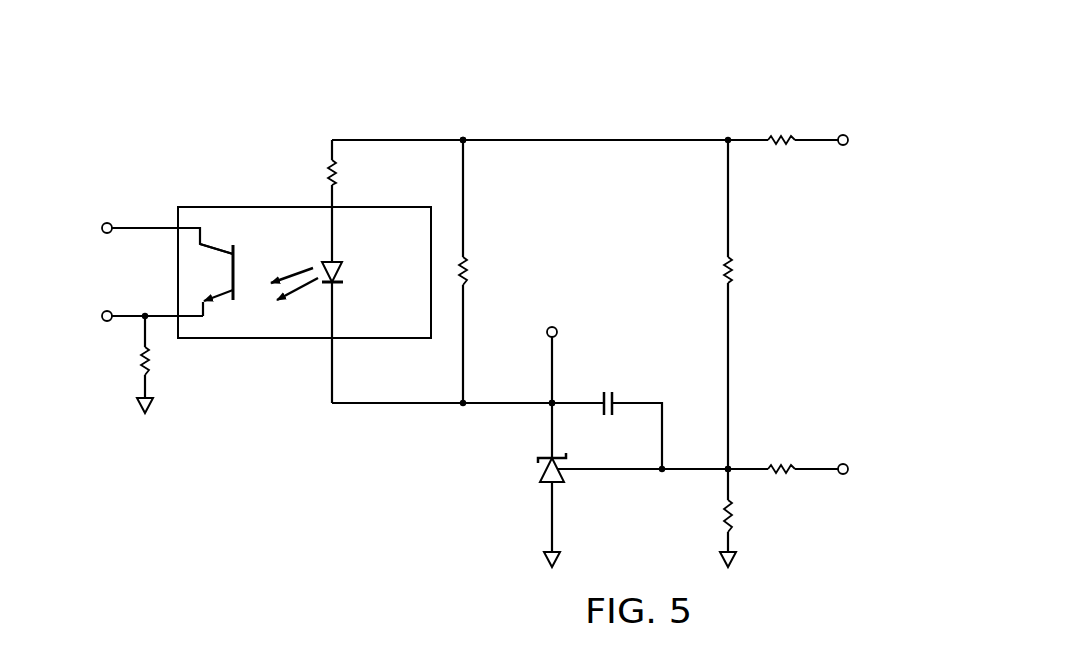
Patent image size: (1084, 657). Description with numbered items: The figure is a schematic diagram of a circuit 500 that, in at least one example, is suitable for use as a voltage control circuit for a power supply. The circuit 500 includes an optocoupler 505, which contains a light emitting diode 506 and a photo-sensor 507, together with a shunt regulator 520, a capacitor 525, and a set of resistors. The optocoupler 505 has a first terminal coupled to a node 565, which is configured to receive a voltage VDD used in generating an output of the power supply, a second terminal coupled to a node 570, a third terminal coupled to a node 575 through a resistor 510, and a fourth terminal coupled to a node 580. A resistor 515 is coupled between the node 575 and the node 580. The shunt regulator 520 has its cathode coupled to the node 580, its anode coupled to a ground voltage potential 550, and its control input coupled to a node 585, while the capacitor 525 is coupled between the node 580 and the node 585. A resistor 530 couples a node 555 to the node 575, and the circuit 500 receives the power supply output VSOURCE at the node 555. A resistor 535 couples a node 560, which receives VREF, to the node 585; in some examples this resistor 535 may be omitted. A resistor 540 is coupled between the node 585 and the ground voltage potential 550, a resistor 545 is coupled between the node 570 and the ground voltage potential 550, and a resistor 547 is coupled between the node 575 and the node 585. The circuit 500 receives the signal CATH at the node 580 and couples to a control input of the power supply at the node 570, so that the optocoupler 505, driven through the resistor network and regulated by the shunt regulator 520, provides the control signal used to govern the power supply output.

The circuit 500 is at (358, 72).
The optocoupler 505 is at (237, 206).
The light emitting diode 506 is at (343, 270).
The photo-sensor 507 is at (236, 262).
The resistor 510 is at (330, 175).
The resistor 515 is at (466, 272).
The shunt regulator 520 is at (540, 456).
The capacitor 525 is at (608, 390).
The resistor 530 is at (783, 136).
The resistor 535 is at (785, 464).
The resistor 540 is at (732, 518).
The resistor 545 is at (142, 362).
The resistor 547 is at (730, 270).
The ground voltage potential 550 is at (140, 415).
The node 555 is at (845, 134).
The node 560 is at (845, 480).
The node 565 is at (105, 222).
The node 570 is at (105, 310).
The node 575 is at (463, 138).
The node 580 is at (549, 402).
The node 585 is at (724, 466).